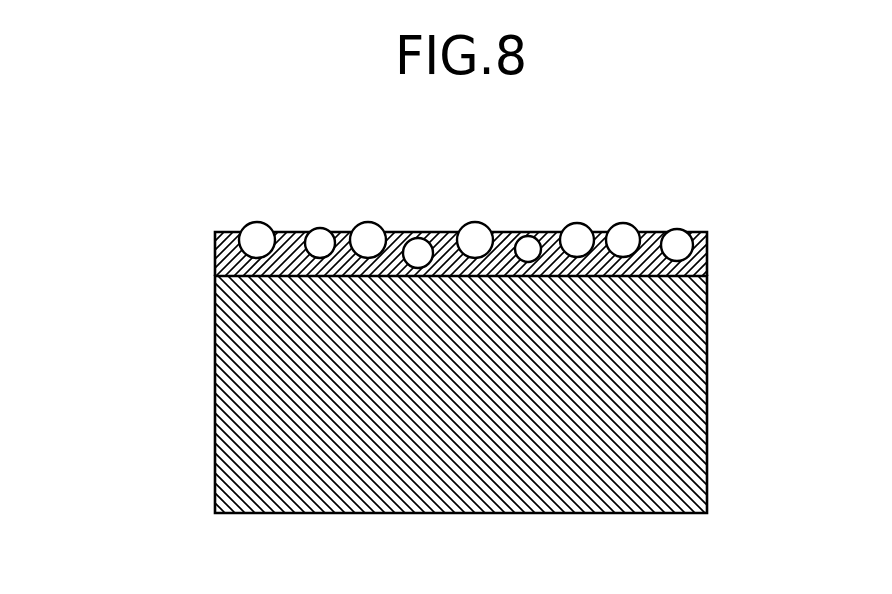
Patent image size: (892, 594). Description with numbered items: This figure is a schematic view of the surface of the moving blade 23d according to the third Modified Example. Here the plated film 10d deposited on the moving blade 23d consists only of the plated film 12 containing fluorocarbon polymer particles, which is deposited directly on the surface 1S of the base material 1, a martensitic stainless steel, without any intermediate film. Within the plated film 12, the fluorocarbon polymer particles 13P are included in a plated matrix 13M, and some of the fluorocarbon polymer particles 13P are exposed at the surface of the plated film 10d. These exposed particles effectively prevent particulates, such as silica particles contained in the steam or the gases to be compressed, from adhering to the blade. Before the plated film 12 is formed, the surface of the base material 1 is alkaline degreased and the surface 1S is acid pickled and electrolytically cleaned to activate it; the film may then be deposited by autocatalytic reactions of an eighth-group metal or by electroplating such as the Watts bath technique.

The base material 1 is at (620, 513).
The surface of the base material 1S is at (712, 277).
The plated film containing fluorocarbon polymer particles 12 is at (487, 208).
The fluorocarbon polymer particles 13P is at (320, 234).
The plated matrix 13M is at (553, 238).
The plated film 10d is at (205, 233).
The moving blade 23d is at (199, 184).